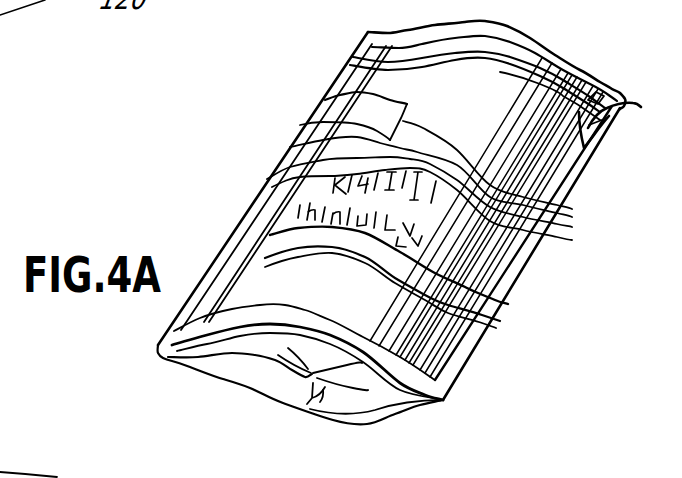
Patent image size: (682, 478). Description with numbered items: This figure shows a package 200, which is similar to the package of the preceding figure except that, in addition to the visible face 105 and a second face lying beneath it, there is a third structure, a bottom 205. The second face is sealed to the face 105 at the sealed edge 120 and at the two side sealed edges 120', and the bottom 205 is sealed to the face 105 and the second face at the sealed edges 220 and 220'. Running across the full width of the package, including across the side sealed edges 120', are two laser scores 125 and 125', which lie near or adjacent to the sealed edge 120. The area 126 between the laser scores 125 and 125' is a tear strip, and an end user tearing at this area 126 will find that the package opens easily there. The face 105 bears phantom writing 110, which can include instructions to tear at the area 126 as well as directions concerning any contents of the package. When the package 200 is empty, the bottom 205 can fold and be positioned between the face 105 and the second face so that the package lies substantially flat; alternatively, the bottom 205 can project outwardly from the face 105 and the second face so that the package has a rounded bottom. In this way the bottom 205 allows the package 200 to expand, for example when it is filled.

The sealed edge 120 is at (496, 59).
The laser score 125' is at (618, 73).
The tear strip area 126 is at (627, 125).
The laser score 125 is at (616, 153).
The package 200 is at (583, 190).
The phantom writing 110 is at (272, 187).
The side sealed edge 120' is at (269, 187).
The face 105 is at (232, 307).
The sealed edge 220 is at (201, 372).
The bottom 205 is at (312, 373).
The sealed edge 220' is at (389, 434).